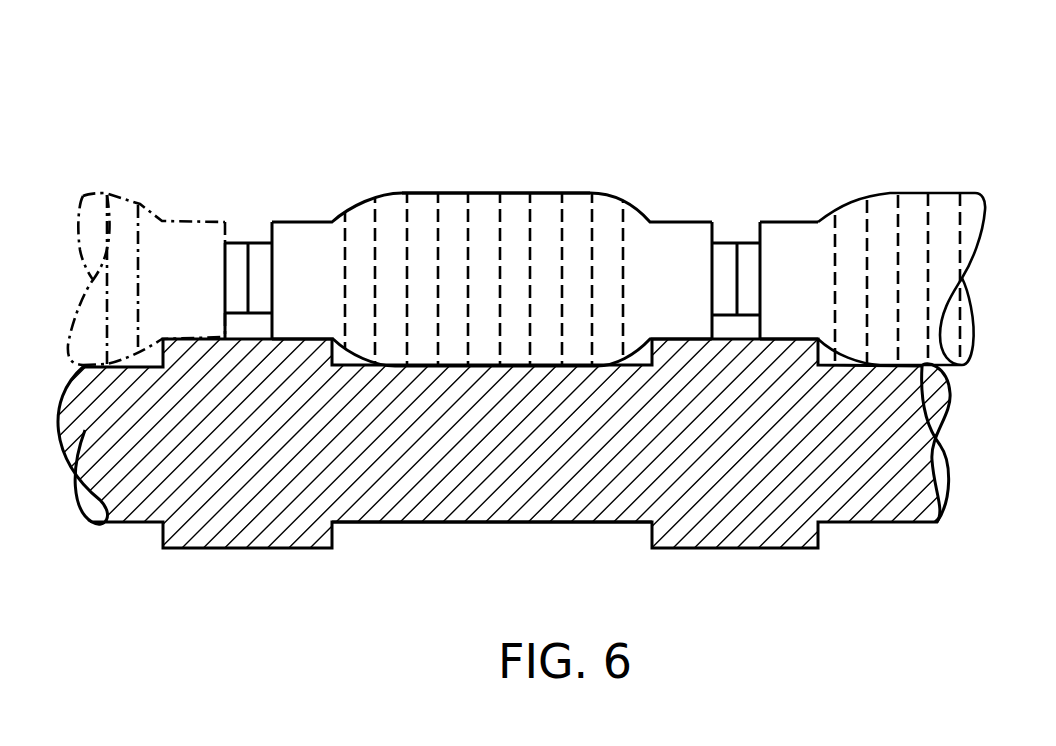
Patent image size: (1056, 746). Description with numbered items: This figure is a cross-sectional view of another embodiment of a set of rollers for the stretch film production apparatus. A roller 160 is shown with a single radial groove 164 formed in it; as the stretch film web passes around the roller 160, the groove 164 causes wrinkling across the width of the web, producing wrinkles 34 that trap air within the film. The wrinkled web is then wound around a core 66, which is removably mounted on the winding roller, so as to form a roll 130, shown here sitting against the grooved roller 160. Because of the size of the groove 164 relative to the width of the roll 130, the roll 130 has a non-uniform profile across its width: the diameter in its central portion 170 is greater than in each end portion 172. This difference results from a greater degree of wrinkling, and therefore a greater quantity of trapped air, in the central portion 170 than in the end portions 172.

The wrinkles 34 is at (438, 192).
The core 66 is at (238, 262).
The roll 130 is at (537, 245).
The roller 160 is at (902, 478).
The radial groove 164 is at (466, 557).
The central portion 170 is at (491, 180).
The end portion 172 is at (296, 207).